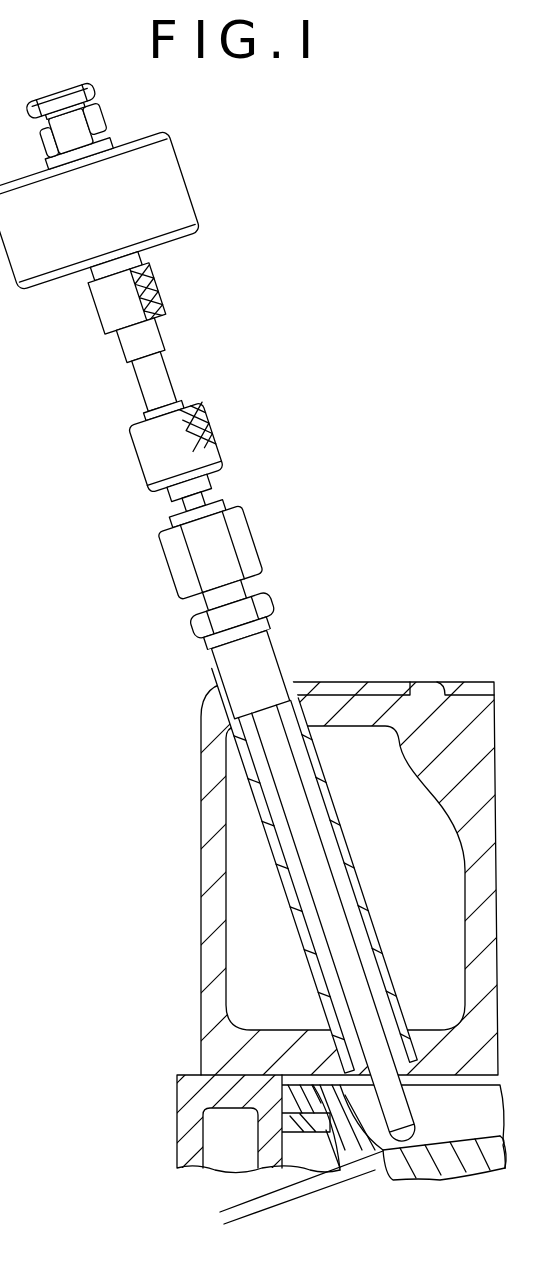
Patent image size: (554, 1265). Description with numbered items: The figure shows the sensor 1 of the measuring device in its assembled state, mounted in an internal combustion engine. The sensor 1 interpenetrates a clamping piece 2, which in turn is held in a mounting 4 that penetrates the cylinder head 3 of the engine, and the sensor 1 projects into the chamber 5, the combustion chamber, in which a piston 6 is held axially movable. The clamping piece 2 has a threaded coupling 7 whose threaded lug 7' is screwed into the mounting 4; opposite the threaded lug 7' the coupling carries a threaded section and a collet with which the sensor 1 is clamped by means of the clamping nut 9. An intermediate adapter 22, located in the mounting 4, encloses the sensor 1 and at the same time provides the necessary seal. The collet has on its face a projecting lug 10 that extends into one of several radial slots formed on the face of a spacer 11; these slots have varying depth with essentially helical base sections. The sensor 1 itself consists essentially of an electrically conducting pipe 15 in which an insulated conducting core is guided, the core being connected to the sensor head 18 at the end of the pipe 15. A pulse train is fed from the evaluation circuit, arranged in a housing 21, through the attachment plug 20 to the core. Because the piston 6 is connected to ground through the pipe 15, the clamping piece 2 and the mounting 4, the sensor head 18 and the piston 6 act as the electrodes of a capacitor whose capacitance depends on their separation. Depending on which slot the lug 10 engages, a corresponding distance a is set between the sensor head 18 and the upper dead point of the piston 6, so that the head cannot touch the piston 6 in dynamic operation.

The sensor 1 is at (141, 393).
The clamping piece 2 is at (183, 560).
The cylinder head 3 is at (207, 880).
The mounting 4 is at (373, 937).
The chamber 5 is at (490, 1103).
The piston 6 is at (505, 1168).
The threaded coupling 7 is at (248, 607).
The threaded lug 7' is at (319, 873).
The clamping nut 9 is at (247, 547).
The projecting lug 10 is at (166, 502).
The spacer 11 is at (200, 440).
The pipe 15 is at (315, 864).
The sensor head 18 is at (444, 1183).
The attachment plug 20 is at (148, 282).
The housing 21 is at (125, 177).
The intermediate adapter 22 is at (350, 880).
The distance a is at (212, 1175).